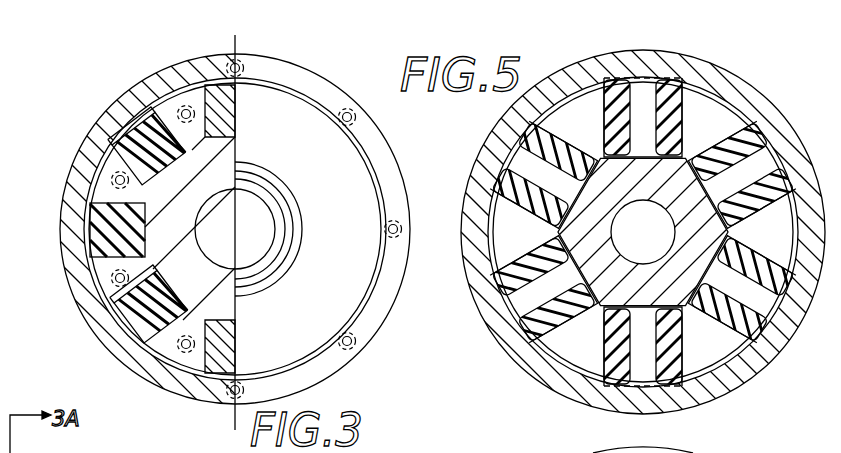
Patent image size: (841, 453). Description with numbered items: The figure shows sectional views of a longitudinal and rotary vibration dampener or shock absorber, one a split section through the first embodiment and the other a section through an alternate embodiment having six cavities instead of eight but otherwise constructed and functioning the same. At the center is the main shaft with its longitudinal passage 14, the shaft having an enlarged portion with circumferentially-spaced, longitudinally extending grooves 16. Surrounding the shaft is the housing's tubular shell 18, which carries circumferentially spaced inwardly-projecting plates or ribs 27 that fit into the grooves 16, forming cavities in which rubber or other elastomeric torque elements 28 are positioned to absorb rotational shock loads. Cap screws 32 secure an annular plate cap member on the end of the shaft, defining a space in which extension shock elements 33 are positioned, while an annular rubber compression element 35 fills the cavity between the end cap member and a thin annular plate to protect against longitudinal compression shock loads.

In FIG. 3, the longitudinal passage 14 is at (203, 247).
In FIG. 5, the longitudinal passage 14 is at (763, 167).
In FIG. 3, the longitudinally extending grooves 16 is at (147, 338).
In FIG. 5, the longitudinally extending grooves 16 is at (505, 290).
In FIG. 3, the tubular shell 18 is at (78, 305).
In FIG. 5, the tubular shell 18 is at (768, 352).
In FIG. 5, the inwardly-projecting plates or ribs 27 is at (712, 392).
In FIG. 5, the torque elements 28 is at (612, 78).
In FIG. 3, the cap screws 32 is at (118, 177).
In FIG. 3, the extension shock elements 33 is at (93, 237).
In FIG. 3, the annular rubber compression element 35 is at (347, 285).